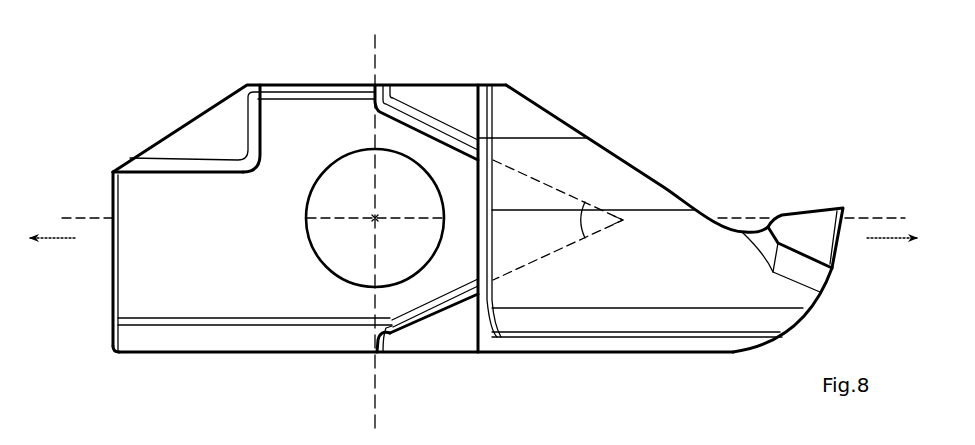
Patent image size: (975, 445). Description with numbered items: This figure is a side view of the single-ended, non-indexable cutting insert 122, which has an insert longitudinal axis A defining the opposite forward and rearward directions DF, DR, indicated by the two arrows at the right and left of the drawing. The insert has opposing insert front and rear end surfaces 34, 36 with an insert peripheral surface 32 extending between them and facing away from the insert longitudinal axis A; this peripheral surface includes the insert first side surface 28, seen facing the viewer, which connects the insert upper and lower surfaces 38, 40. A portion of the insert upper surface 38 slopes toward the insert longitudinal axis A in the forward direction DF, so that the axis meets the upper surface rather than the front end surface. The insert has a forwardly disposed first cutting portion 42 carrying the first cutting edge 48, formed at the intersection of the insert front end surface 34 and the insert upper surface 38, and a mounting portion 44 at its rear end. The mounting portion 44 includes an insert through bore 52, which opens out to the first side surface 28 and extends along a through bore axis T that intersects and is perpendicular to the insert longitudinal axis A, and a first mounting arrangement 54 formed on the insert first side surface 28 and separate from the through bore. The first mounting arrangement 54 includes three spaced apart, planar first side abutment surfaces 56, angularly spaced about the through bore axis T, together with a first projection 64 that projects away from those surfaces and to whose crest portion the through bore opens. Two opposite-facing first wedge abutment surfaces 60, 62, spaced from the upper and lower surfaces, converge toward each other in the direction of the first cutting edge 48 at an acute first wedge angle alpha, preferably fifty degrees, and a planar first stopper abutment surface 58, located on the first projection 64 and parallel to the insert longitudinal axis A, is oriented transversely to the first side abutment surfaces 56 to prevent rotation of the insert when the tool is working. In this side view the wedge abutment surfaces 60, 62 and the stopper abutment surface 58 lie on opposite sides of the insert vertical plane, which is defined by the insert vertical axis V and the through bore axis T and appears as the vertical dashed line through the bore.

The cutting insert 122 is at (690, 66).
The insert first side surface 28 is at (222, 278).
The insert peripheral surface 32 is at (577, 153).
The insert front end surface 34 is at (822, 288).
The insert rear end surface 36 is at (105, 293).
The insert upper surface 38 is at (466, 85).
The insert lower surface 40 is at (587, 353).
The first cutting portion 42 is at (849, 176).
The mounting portion 44 is at (289, 61).
The first cutting edge 48 is at (846, 208).
The insert through bore 52 is at (352, 264).
The first mounting arrangement 54 is at (289, 289).
The first side abutment surface 56 is at (230, 143).
The first stopper abutment surface 58 is at (168, 170).
The first wedge upper abutment surface 60 is at (420, 130).
The first wedge lower abutment surface 62 is at (440, 317).
The first projection 64 is at (154, 199).
The through bore axis T is at (376, 217).
The insert vertical axis V is at (379, 43).
The insert longitudinal axis A is at (876, 218).
The rearward direction DR is at (52, 259).
The forward direction DF is at (891, 259).
The first wedge angle alpha is at (558, 220).